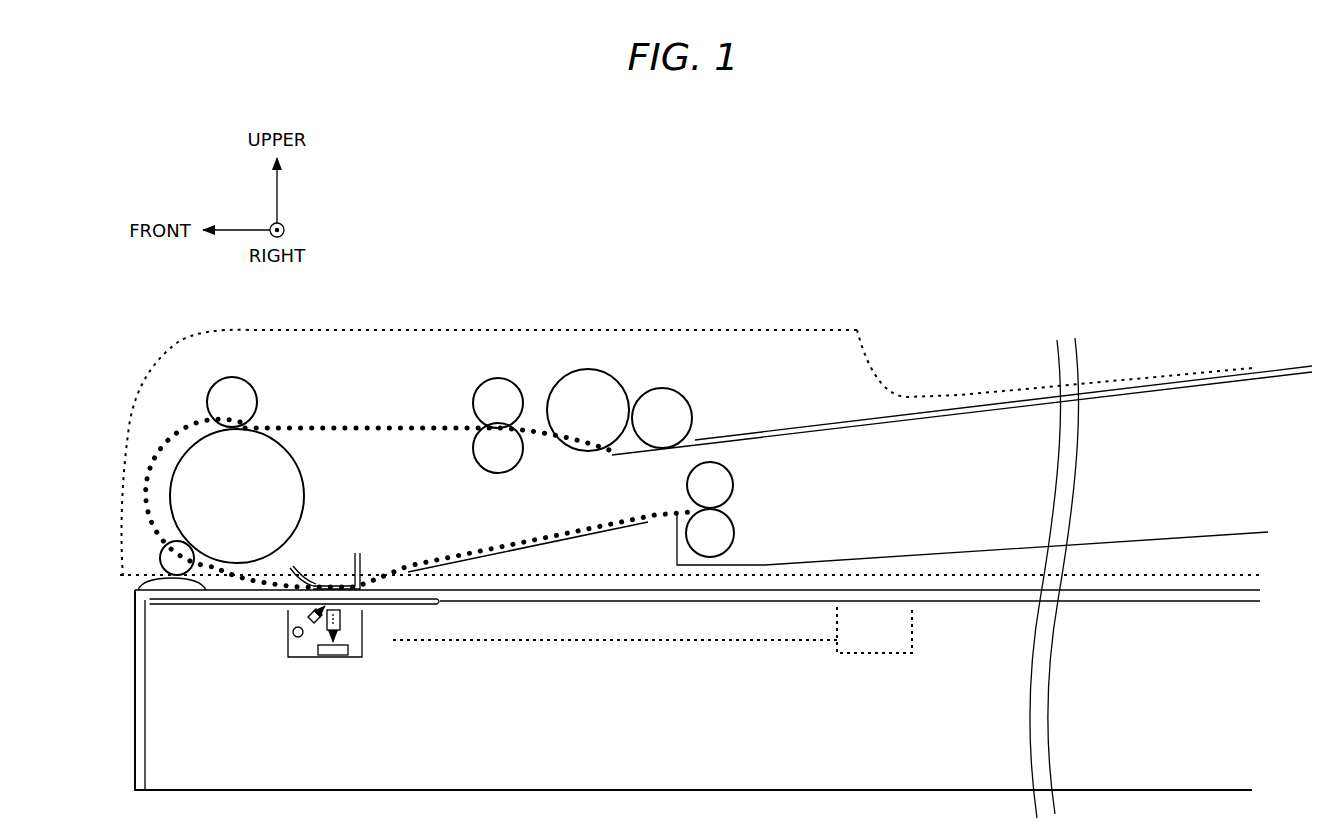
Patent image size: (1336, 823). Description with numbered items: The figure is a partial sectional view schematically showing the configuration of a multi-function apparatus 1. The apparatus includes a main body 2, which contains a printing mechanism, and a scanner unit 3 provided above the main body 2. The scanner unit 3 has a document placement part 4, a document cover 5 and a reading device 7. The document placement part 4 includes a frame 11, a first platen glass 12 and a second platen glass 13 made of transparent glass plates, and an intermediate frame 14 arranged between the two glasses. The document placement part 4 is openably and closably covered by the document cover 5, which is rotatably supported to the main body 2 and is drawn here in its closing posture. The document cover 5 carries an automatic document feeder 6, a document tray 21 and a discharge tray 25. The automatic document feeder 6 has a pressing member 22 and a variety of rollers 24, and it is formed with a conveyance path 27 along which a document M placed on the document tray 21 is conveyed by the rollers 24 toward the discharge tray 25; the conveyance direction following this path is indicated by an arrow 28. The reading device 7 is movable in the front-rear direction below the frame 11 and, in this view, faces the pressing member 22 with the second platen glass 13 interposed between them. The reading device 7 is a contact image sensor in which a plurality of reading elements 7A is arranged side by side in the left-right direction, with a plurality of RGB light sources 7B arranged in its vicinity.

The multi-function apparatus 1 is at (718, 218).
The main body 2 is at (135, 670).
The scanner unit 3 is at (128, 596).
The document placement part 4 is at (900, 588).
The document cover 5 is at (405, 322).
The automatic document feeder 6 is at (172, 427).
The reading device 7 is at (288, 625).
The reading elements 7A is at (325, 656).
The light sources 7B is at (296, 638).
The frame 11 is at (140, 581).
The first platen glass 12 is at (525, 600).
The second platen glass 13 is at (188, 599).
The intermediate frame 14 is at (392, 596).
The document tray 21 is at (1173, 385).
The pressing member 22 is at (356, 553).
The rollers 24 is at (220, 405).
The discharge tray 25 is at (1163, 543).
The conveyance path 27 is at (551, 535).
The arrow 28 is at (150, 515).
The document M is at (848, 421).